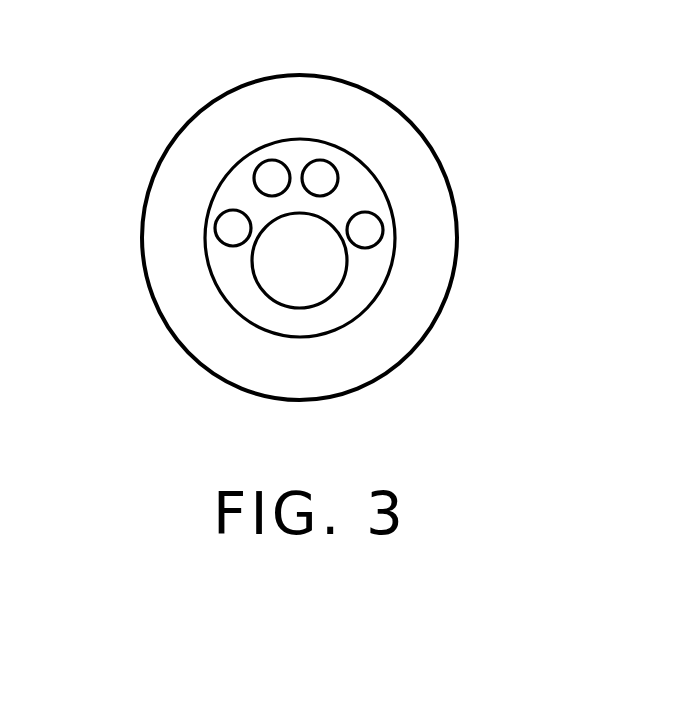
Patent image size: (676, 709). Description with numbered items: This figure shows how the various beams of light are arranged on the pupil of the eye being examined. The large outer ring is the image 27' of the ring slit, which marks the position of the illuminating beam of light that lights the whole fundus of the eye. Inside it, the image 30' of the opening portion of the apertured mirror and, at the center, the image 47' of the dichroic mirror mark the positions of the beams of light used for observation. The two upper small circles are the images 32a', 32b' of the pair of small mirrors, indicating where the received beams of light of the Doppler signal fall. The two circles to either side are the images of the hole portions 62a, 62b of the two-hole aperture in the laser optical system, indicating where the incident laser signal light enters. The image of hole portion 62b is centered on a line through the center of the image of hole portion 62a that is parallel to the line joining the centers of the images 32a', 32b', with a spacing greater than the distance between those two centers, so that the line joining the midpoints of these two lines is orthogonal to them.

The image of the ring slit 27' is at (259, 237).
The image of the opening portion of the apertured mirror 30' is at (373, 254).
The image of the dichroic mirror 47' is at (359, 331).
The image of the small mirror 32a' is at (352, 102).
The image of the small mirror 32b' is at (243, 102).
The hole portion 62a is at (368, 232).
The hole portion 62b is at (227, 226).